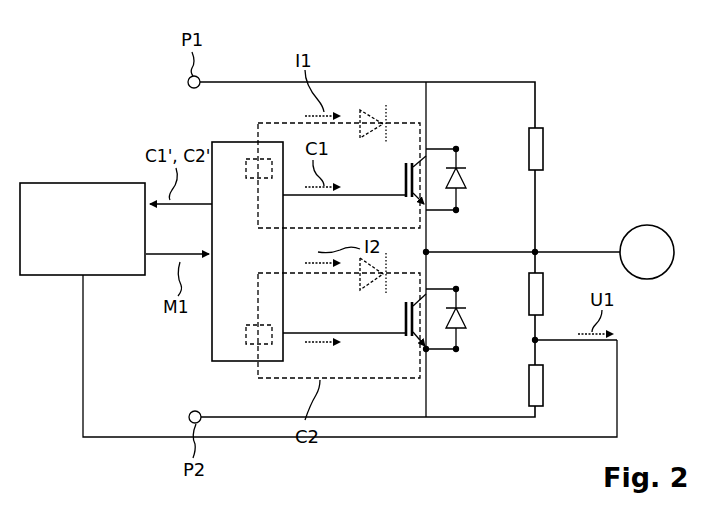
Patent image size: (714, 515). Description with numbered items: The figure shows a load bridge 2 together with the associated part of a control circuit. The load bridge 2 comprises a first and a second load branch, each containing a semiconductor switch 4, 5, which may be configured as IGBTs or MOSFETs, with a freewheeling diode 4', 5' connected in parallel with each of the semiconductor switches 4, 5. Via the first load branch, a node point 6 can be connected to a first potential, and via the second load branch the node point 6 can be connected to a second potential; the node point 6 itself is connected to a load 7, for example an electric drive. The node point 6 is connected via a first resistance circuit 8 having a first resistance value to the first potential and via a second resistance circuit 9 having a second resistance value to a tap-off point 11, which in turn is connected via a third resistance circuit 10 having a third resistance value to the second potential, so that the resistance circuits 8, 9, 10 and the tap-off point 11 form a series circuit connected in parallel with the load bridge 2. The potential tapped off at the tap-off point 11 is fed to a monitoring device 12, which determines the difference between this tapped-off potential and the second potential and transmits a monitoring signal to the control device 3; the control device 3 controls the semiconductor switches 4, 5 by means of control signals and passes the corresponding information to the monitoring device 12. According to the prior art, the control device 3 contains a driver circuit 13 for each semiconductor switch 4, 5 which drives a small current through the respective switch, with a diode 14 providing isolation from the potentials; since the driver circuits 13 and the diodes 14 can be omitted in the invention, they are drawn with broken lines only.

The load bridge 2 is at (538, 67).
The control device 3 is at (250, 362).
The first semiconductor switch 4 is at (393, 180).
The freewheeling diode 4' is at (468, 180).
The second semiconductor switch 5 is at (393, 320).
The freewheeling diode 5' is at (467, 319).
The node point 6 is at (430, 250).
The load 7 is at (647, 225).
The first resistance circuit 8 is at (544, 142).
The second resistance circuit 9 is at (544, 287).
The third resistance circuit 10 is at (544, 382).
The tap-off point 11 is at (533, 341).
The monitoring device 12 is at (83, 182).
The driver circuit 13 is at (254, 160).
The diode 14 is at (377, 108).